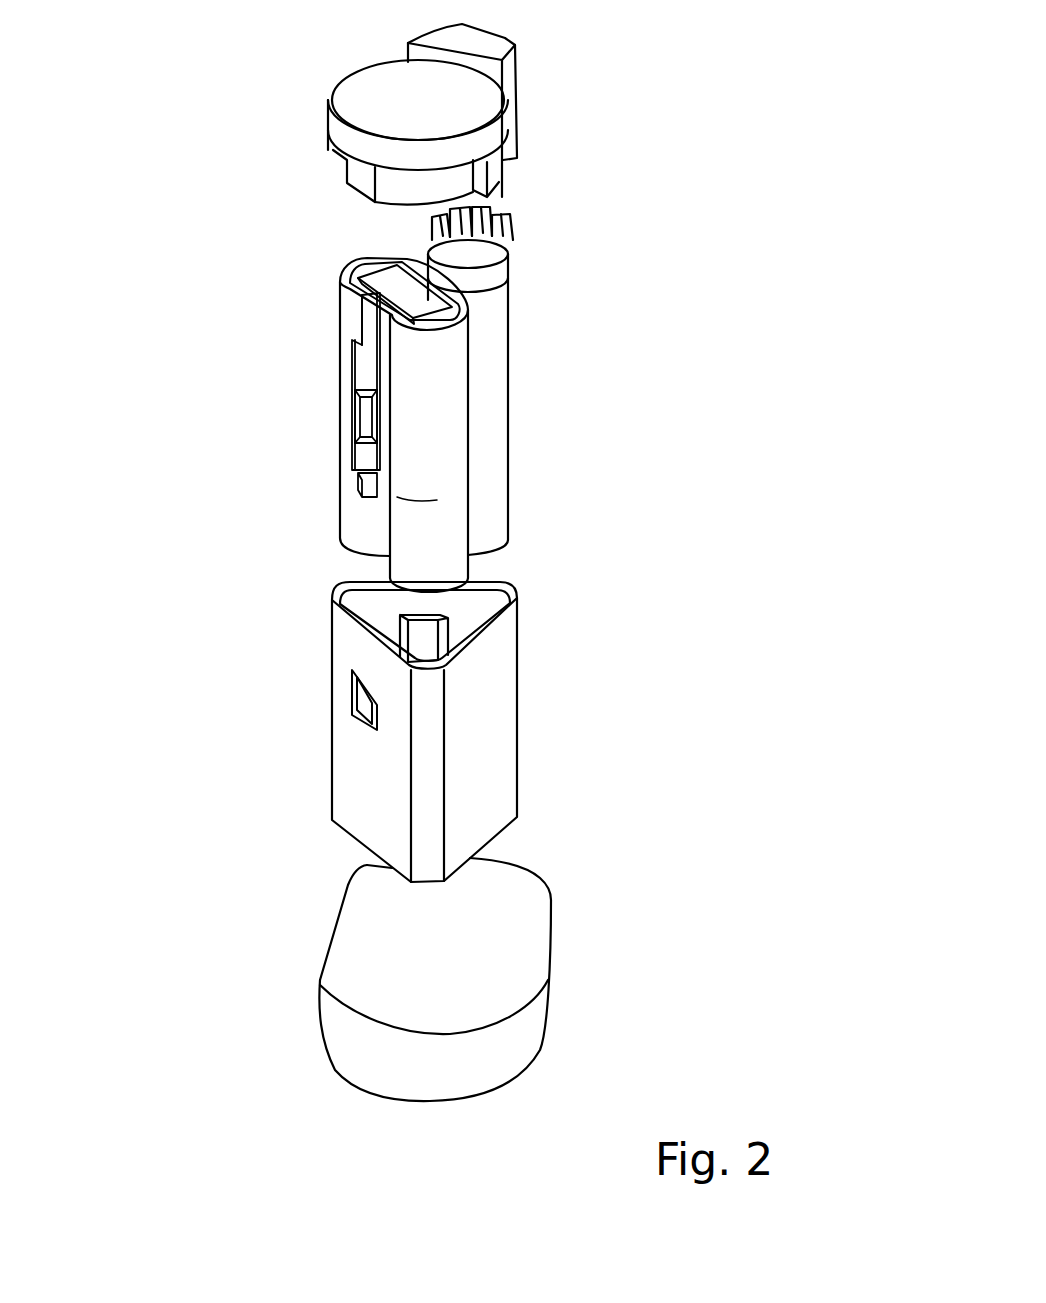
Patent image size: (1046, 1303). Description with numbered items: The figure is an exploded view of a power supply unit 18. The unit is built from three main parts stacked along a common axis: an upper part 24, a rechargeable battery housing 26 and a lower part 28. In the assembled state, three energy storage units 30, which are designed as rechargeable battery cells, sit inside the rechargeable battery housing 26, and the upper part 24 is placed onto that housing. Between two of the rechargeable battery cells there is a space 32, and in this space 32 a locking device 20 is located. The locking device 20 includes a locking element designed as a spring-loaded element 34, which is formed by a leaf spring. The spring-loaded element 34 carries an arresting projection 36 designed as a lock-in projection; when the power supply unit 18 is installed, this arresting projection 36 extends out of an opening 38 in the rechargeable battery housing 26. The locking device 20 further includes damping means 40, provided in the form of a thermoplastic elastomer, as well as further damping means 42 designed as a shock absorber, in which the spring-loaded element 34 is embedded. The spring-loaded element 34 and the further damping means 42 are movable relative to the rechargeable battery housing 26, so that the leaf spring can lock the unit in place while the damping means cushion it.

The power supply unit 18 is at (83, 213).
The locking device 20 is at (330, 399).
The upper part 24 is at (453, 95).
The rechargeable battery housing 26 is at (486, 760).
The lower part 28 is at (527, 982).
The energy storage unit 30 is at (493, 363).
The space 32 is at (440, 367).
The spring-loaded element 34 is at (360, 490).
The arresting projection 36 is at (360, 417).
The opening 38 is at (357, 700).
The damping means 40 is at (358, 330).
The further damping means 42 is at (397, 497).